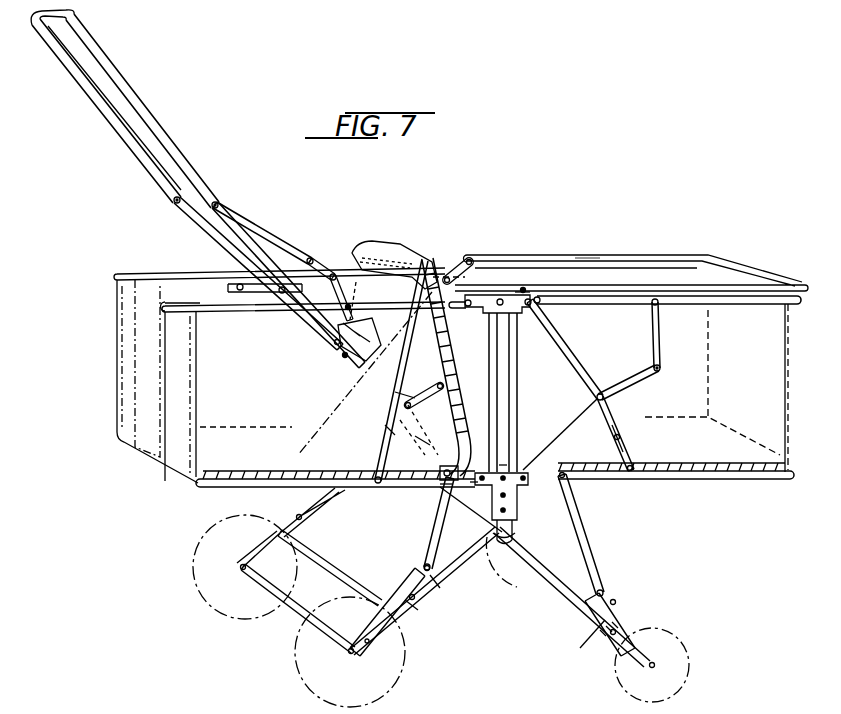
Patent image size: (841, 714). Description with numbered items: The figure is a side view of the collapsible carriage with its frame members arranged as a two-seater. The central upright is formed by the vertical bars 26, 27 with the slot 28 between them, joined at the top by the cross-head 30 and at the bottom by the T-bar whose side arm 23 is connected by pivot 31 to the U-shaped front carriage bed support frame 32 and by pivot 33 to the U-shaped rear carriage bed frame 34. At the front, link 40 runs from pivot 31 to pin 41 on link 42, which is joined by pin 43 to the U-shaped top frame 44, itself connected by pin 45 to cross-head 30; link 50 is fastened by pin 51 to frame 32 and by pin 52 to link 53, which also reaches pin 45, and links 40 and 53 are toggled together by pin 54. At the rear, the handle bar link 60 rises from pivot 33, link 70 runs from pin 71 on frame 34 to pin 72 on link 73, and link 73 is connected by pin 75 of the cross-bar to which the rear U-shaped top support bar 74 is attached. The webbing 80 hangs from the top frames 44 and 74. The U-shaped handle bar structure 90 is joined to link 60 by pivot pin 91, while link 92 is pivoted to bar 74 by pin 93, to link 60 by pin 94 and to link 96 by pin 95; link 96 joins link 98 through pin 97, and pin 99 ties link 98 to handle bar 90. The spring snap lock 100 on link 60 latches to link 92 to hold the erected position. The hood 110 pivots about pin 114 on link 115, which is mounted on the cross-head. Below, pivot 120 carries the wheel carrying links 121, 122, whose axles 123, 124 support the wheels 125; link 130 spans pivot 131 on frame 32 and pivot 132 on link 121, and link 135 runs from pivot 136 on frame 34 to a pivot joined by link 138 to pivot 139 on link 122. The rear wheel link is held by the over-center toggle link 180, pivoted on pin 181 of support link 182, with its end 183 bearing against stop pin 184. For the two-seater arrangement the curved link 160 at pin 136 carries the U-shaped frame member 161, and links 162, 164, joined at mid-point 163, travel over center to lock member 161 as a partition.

The side arm 23 is at (511, 476).
The vertical bar 26 is at (489, 380).
The vertical bar 27 is at (522, 387).
The slot 28 is at (533, 355).
The cross-head 30 is at (479, 290).
The pivot 31 is at (525, 483).
The front carriage bed support frame 32 is at (711, 478).
The pivot 33 is at (490, 482).
The carriage bed frame 34 is at (288, 458).
The link 40 is at (630, 362).
The pin 41 is at (658, 373).
The link 42 is at (661, 337).
The pin 43 is at (651, 305).
The U-shaped top frame 44 is at (747, 307).
The pin 45 is at (528, 308).
The link 50 is at (622, 454).
The pin 51 is at (631, 474).
The pin 52 is at (622, 436).
The link 53 is at (566, 351).
The pin 54 is at (605, 398).
The handle bar link 60 is at (313, 322).
The link 70 is at (168, 187).
The pin 71 is at (377, 484).
The pin 72 is at (393, 434).
The link 73 is at (448, 378).
The rear U-shaped top support bar 74 is at (238, 313).
The pin 75 is at (468, 316).
The webbing 80 is at (117, 335).
The handle bar structure 90 is at (152, 115).
The pivot pin 91 is at (285, 290).
The link 92 is at (362, 292).
The pin 93 is at (351, 305).
The pin 94 is at (358, 367).
The pin 95 is at (345, 266).
The link 96 is at (341, 304).
The pin 97 is at (313, 258).
The link 98 is at (280, 232).
The pin 99 is at (218, 202).
The spring snap lock 100 is at (330, 348).
The hood 110 is at (658, 249).
The pin 114 is at (523, 290).
The link 115 is at (521, 291).
The pivot 120 is at (506, 512).
The wheel carrying link 121 is at (570, 604).
The wheel carrying link 122 is at (460, 541).
The axle 123 is at (660, 667).
The axle 124 is at (283, 617).
The wheel 125 is at (678, 632).
The link 130 is at (592, 544).
The pivot 131 is at (560, 464).
The pivot 132 is at (607, 588).
The link 135 is at (430, 527).
The pivot 136 is at (430, 497).
The link 138 is at (605, 620).
The pivot 139 is at (413, 605).
The curved link 160 is at (446, 476).
The U-shaped frame member 161 is at (402, 372).
The link 162 is at (388, 440).
The mid-point 163 is at (395, 398).
The link 164 is at (409, 402).
The over-center toggle link 180 is at (630, 610).
The pin 181 is at (362, 658).
The support link 182 is at (533, 593).
The end 183 is at (421, 562).
The stop pin 184 is at (437, 577).